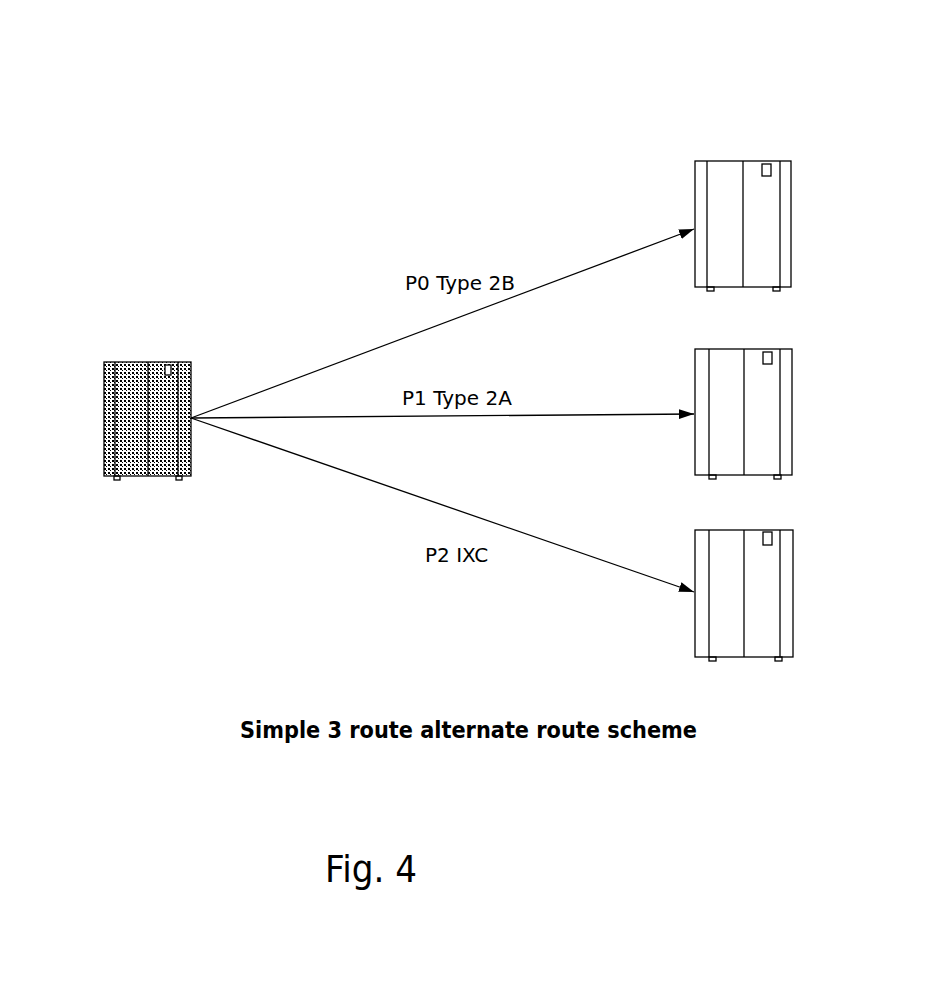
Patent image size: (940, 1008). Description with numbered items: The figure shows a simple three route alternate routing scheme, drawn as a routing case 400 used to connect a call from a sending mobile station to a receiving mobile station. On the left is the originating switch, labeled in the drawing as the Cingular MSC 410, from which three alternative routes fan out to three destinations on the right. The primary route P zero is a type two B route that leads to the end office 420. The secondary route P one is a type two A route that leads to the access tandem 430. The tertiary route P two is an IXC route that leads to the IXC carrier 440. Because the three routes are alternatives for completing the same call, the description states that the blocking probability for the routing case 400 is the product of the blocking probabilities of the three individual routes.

The routing case 400 is at (792, 119).
The Cingular MSC 410 is at (146, 353).
The end office 420 is at (813, 227).
The access tandem 430 is at (813, 414).
The IXC carrier 440 is at (813, 589).